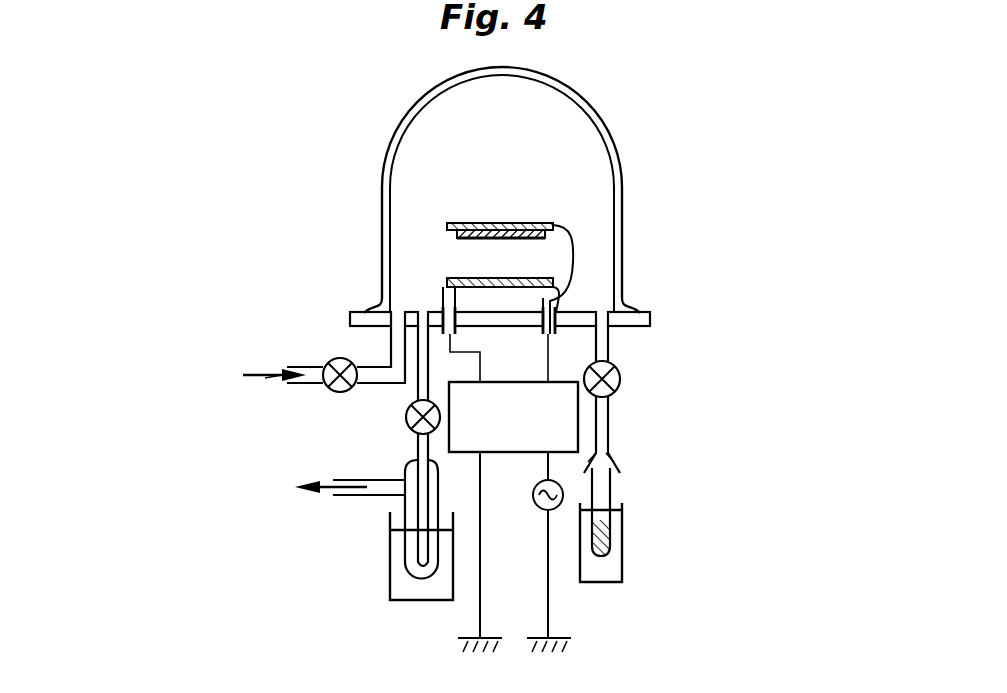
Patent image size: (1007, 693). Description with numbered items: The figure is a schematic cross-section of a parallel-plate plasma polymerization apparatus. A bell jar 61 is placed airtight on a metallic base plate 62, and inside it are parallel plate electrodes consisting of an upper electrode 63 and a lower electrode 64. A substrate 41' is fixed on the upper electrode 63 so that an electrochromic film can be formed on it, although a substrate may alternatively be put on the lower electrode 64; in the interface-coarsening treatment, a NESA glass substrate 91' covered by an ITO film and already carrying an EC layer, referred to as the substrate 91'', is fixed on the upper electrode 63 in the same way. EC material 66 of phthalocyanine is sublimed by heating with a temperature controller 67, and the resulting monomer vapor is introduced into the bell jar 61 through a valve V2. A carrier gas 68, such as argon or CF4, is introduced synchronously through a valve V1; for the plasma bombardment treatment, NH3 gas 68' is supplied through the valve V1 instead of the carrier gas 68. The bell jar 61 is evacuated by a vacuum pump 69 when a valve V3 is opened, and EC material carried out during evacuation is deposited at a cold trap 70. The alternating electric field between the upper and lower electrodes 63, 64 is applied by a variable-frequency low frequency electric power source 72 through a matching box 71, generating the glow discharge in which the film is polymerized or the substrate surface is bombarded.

The bell jar 61 is at (622, 209).
The metallic base plate 62 is at (650, 318).
The upper electrode 63 is at (455, 222).
The lower electrode 64 is at (455, 283).
The substrate 41' is at (384, 230).
The NESA glass substrate 91' is at (501, 234).
The substrate 91'' is at (501, 234).
The valve V1 is at (337, 359).
The valve V2 is at (620, 379).
The valve V3 is at (405, 417).
The EC material 66 is at (608, 528).
The temperature controller 67 is at (622, 571).
The carrier gas 68 is at (263, 349).
The NH3 gas 68' is at (254, 411).
The vacuum pump 69 is at (330, 492).
The cold trap 70 is at (390, 585).
The matching box 71 is at (514, 455).
The low frequency electric power source 72 is at (537, 510).